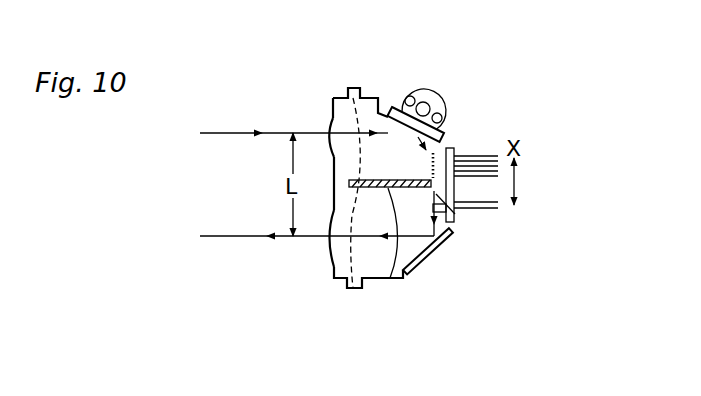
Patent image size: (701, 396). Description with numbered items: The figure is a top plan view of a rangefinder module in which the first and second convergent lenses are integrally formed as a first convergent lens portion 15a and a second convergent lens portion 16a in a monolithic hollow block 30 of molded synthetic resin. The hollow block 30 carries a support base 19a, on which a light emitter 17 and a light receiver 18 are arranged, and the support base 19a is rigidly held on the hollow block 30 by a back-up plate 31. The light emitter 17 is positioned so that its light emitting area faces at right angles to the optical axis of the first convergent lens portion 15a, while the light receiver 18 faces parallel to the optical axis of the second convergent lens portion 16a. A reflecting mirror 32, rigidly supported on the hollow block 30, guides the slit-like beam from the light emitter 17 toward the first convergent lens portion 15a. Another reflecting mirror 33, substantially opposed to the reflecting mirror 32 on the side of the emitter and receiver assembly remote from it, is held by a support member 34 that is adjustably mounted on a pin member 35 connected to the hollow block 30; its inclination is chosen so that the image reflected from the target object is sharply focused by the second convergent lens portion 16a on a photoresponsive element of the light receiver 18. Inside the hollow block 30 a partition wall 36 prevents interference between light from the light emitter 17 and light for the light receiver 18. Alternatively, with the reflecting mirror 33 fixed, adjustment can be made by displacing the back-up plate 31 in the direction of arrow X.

The first convergent lens portion 15a is at (335, 243).
The second convergent lens portion 16a is at (333, 125).
The light emitter 17 is at (454, 214).
The light receiver 18 is at (449, 148).
The support base 19a is at (458, 210).
The monolithic hollow block 30 is at (327, 277).
The back-up plate 31 is at (455, 192).
The reflecting mirror 32 is at (430, 253).
The reflecting mirror 33 is at (392, 110).
The support member 34 is at (418, 96).
The pin member 35 is at (424, 109).
The partition wall 36 is at (390, 278).